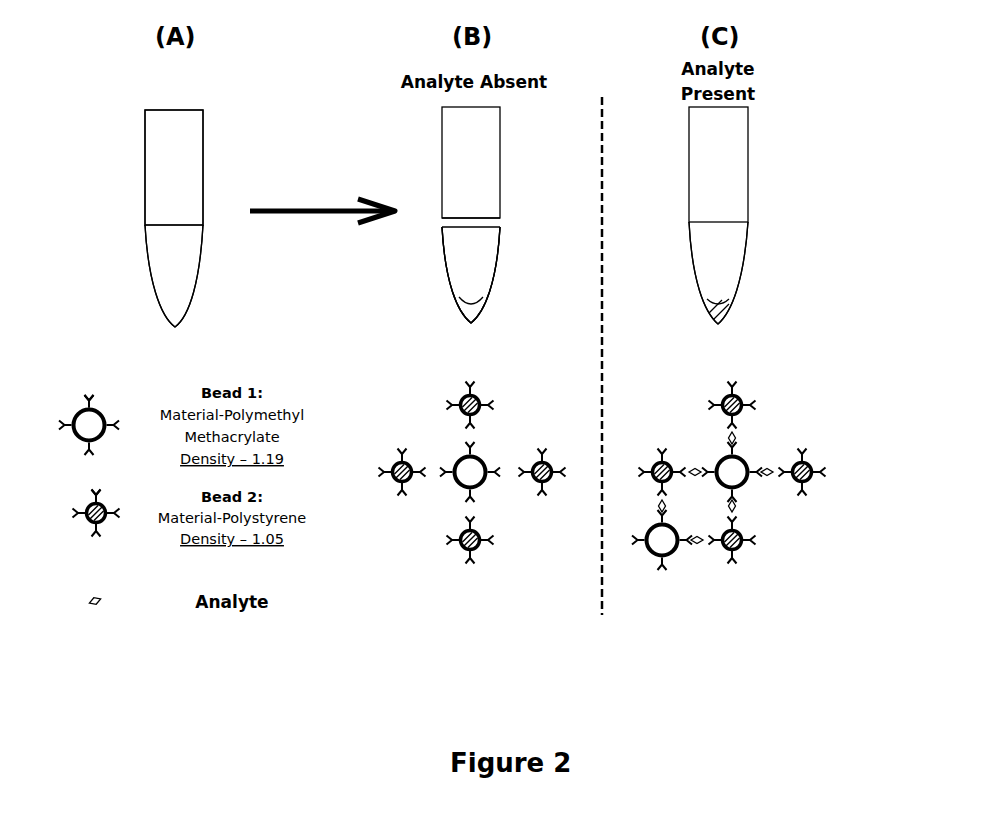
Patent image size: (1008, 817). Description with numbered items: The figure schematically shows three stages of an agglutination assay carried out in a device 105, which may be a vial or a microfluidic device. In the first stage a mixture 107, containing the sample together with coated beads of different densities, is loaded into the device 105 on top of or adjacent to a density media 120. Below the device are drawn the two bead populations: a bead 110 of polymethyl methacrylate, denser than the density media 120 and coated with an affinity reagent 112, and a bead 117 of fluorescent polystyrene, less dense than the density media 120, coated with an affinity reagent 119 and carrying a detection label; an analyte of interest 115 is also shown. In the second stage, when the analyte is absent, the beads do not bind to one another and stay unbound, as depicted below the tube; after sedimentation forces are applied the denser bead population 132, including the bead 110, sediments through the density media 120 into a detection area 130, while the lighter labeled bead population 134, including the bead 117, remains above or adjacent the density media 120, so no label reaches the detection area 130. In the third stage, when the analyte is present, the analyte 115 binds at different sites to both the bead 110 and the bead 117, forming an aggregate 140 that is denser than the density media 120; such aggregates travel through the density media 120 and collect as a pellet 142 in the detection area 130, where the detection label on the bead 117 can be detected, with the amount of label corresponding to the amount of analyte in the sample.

In FIG. 2A, the device 105 is at (108, 231).
In FIG. 2B, the device 105 is at (398, 251).
In FIG. 2C, the device 105 is at (820, 212).
In FIG. 2A, the mixture 107 is at (204, 152).
In FIG. 2A, the density media 120 is at (197, 282).
In FIG. 2B, the density media 120 is at (493, 270).
In FIG. 2A, the bead 110 is at (72, 412).
In FIG. 2B, the bead 110 is at (488, 459).
In FIG. 2A, the affinity reagent 112 is at (92, 399).
In FIG. 2A, the bead 117 is at (105, 519).
In FIG. 2B, the bead 117 is at (480, 395).
In FIG. 2A, the affinity reagent 119 is at (91, 500).
In FIG. 2A, the analyte of interest 115 is at (100, 606).
In FIG. 2B, the bead population 134 is at (500, 222).
In FIG. 2B, the bead population 132 is at (484, 313).
In FIG. 2B, the detection area 130 is at (444, 331).
In FIG. 2C, the detection area 130 is at (772, 301).
In FIG. 2C, the pellet 142 is at (730, 311).
In FIG. 2C, the aggregate 140 is at (906, 428).